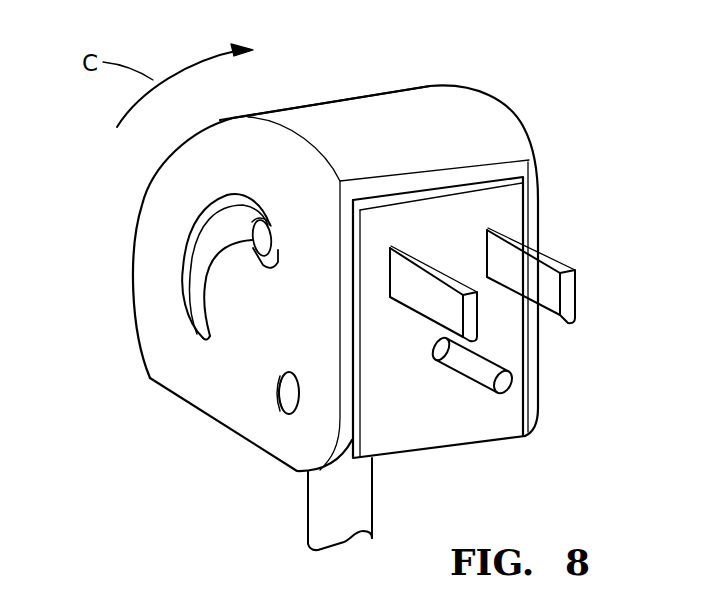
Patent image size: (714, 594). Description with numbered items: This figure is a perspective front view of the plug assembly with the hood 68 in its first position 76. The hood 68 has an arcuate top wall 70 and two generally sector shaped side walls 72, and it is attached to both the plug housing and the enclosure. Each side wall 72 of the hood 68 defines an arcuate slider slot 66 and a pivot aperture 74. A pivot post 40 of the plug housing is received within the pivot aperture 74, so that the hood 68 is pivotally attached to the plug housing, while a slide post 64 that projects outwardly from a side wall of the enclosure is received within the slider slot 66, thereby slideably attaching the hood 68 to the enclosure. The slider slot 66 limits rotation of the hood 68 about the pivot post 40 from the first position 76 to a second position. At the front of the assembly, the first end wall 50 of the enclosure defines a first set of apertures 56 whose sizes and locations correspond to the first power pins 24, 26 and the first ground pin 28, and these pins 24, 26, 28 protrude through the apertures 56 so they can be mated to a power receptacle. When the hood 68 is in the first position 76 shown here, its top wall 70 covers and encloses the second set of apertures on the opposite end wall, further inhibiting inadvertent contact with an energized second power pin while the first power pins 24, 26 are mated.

The first power pin 24 is at (467, 285).
The first power pin 26 is at (563, 268).
The first ground pin 28 is at (507, 383).
The pivot post 40 is at (276, 399).
The first end wall 50 is at (467, 427).
The first set of apertures 56 is at (392, 247).
The slide post 64 is at (250, 234).
The slider slot 66 is at (203, 250).
The hood 68 is at (457, 100).
The arcuate top wall 70 is at (302, 117).
The side wall 72 is at (148, 323).
The pivot aperture 74 is at (275, 384).
The first position 76 is at (253, 222).